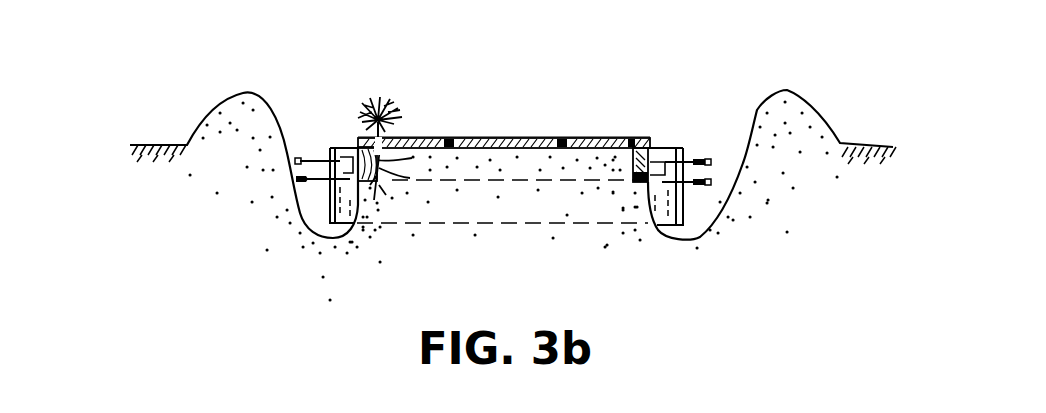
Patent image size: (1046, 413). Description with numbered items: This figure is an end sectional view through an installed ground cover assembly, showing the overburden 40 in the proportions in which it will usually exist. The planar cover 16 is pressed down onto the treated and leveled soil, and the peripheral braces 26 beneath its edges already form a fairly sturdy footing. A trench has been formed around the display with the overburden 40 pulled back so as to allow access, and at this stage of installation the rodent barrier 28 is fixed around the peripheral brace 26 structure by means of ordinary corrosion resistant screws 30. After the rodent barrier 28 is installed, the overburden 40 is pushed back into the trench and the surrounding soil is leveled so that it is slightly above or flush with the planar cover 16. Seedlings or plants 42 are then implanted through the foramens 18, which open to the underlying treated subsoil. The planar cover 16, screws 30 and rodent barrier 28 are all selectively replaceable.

The planar cover 16 is at (427, 137).
The foramens 18 is at (560, 137).
The peripheral braces 26 is at (355, 140).
The rodent barrier 28 is at (668, 147).
The screws 30 is at (300, 157).
The overburden 40 is at (240, 170).
The plants 42 is at (372, 97).